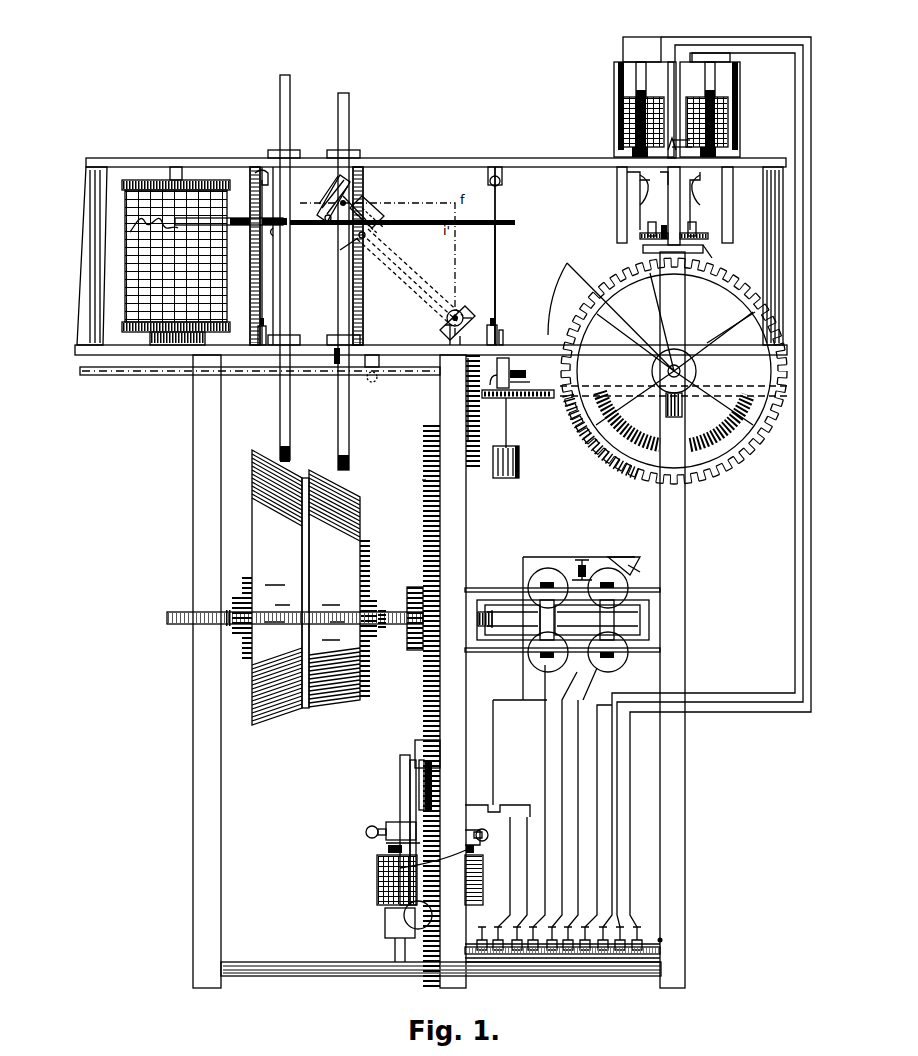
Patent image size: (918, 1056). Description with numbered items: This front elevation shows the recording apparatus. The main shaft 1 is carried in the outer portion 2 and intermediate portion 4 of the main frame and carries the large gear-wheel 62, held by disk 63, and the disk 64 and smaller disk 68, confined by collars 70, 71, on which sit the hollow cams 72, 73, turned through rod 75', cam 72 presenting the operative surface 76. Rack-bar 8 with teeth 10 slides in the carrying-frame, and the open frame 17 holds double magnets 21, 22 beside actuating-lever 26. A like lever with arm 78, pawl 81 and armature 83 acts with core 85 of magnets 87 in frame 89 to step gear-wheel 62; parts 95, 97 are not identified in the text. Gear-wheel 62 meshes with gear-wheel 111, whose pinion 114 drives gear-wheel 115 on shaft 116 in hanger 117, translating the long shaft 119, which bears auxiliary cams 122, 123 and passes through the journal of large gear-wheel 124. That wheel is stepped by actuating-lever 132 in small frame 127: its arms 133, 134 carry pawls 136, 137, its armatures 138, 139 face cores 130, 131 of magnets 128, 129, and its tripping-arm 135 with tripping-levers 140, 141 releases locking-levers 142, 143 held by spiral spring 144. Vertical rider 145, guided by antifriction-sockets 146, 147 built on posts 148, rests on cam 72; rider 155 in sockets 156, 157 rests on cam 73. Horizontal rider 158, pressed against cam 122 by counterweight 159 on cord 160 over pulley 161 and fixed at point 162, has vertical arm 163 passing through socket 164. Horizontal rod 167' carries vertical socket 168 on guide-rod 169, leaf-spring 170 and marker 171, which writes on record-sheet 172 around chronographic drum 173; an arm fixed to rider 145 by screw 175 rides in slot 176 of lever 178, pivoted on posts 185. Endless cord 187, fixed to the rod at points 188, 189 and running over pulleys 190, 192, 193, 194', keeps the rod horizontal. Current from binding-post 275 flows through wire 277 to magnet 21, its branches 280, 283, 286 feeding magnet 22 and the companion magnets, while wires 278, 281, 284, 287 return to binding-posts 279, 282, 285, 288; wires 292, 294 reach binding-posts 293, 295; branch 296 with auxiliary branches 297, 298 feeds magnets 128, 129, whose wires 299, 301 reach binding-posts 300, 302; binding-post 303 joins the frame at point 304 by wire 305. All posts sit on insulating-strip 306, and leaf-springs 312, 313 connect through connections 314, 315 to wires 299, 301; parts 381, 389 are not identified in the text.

The main shaft 1 is at (170, 625).
The outer portion of the main frame 2 is at (193, 638).
The intermediate portion of the main frame 4 is at (440, 395).
The rack-bar 8 is at (492, 610).
The row of teeth 10 is at (485, 612).
The open frame 17 is at (655, 596).
The double magnet 21 is at (545, 580).
The double magnet 22 is at (607, 580).
The actuating-lever 26 is at (562, 620).
The large gear-wheel 62 is at (425, 528).
The disk 63 is at (402, 648).
The disk 64 is at (372, 690).
The smaller disk 68 is at (243, 586).
The collar 70 is at (243, 606).
The collar 71 is at (378, 640).
The hollow cam 72 is at (365, 516).
The hollow cam 73 is at (253, 462).
The rod 75' is at (387, 624).
The operative surface of the cam 76 is at (355, 493).
The right-angled arm 78 is at (410, 779).
The spring-pressed pawl 81 is at (424, 745).
The armature 83 is at (403, 832).
The core 85 is at (387, 851).
The magnet 87 is at (378, 890).
The frame 89 is at (400, 796).
The lever 95 is at (413, 916).
The roller 97 is at (418, 915).
The gear-wheel 111 is at (424, 479).
The pinion 114 is at (471, 470).
The gear-wheel 115 is at (473, 412).
The shaft 116 is at (532, 400).
The hanger 117 is at (715, 314).
The long shaft 119 is at (673, 358).
The auxiliary cam 122 is at (590, 425).
The auxiliary cam 123 is at (659, 365).
The large gear-wheel 124 is at (600, 319).
The small frame 127 is at (660, 68).
The magnet 128 is at (628, 115).
The magnet 129 is at (729, 107).
The core 130 is at (632, 158).
The core 131 is at (716, 157).
The actuating-lever 132 is at (625, 174).
The right-angled arm 133 is at (617, 206).
The right-angled arm 134 is at (733, 206).
The central tripping-arm 135 is at (682, 216).
The spring-pressed pawl 136 is at (641, 250).
The spring-pressed pawl 137 is at (712, 252).
The armature 138 is at (525, 380).
The armature 139 is at (702, 190).
The tripping-lever 140 is at (650, 224).
The tripping-lever 141 is at (684, 232).
The locking-lever 142 is at (648, 236).
The locking-lever 143 is at (698, 236).
The spiral spring 144 is at (660, 262).
The vertical rider 145 is at (350, 110).
The antifriction-socket 146 is at (338, 338).
The antifriction-socket 147 is at (350, 155).
The post 148 is at (334, 356).
The vertical rider 155 is at (291, 100).
The socket 156 is at (285, 336).
The socket 157 is at (292, 155).
The horizontal rider 158 is at (162, 374).
The counterweight 159 is at (519, 472).
The cord 160 is at (510, 440).
The pulley 161 is at (518, 381).
The point 162 is at (368, 372).
The vertical arm 163 is at (364, 321).
The socket 164 is at (380, 210).
The horizontal rod 167' is at (402, 235).
The vertical socket 168 is at (255, 226).
The vertical guide-rod 169 is at (257, 253).
The horizontal leaf-spring 170 is at (214, 222).
The marker 171 is at (140, 212).
The record-sheet 172 is at (136, 248).
The chronographic drum 173 is at (140, 184).
The screw 175 is at (325, 195).
The slot 176 is at (386, 238).
The lever 178 is at (410, 289).
The post 185 is at (446, 334).
The endless cord 187 is at (262, 262).
The point 188 is at (274, 231).
The point 189 is at (496, 225).
The pulley 190 is at (502, 180).
The pulley 192 is at (262, 334).
The pulley 193 is at (258, 186).
The pulley 194' is at (507, 330).
The binding-post 275 is at (482, 950).
The wire 277 is at (510, 766).
The wire 278 is at (578, 720).
The binding-post 279 is at (568, 950).
The branch wire 280 is at (612, 560).
The wire 281 is at (597, 725).
The binding-post 282 is at (585, 950).
The branch wire 283 is at (565, 573).
The wire 284 is at (545, 776).
The binding-post 285 is at (517, 950).
The branch wire 286 is at (632, 566).
The wire 287 is at (562, 750).
The binding-post 288 is at (552, 950).
The wire 292 is at (505, 812).
The binding-post 293 is at (533, 950).
The wire 294 is at (510, 830).
The binding-post 295 is at (498, 950).
The branch wire 296 is at (690, 45).
The auxiliary branch wire 297 is at (692, 142).
The auxiliary branch wire 298 is at (694, 148).
The wire 299 is at (663, 48).
The binding-post 300 is at (622, 925).
The wire 301 is at (712, 53).
The binding-post 302 is at (608, 925).
The binding-post 303 is at (660, 920).
The point 304 is at (662, 940).
The wire 305 is at (655, 930).
The insulating-strip 306 is at (660, 958).
The leaf-spring 312 is at (648, 128).
The leaf-spring 313 is at (729, 113).
The connection 314 is at (622, 45).
The connection 315 is at (729, 62).
The screw 381 is at (366, 832).
The wire 389 is at (400, 870).